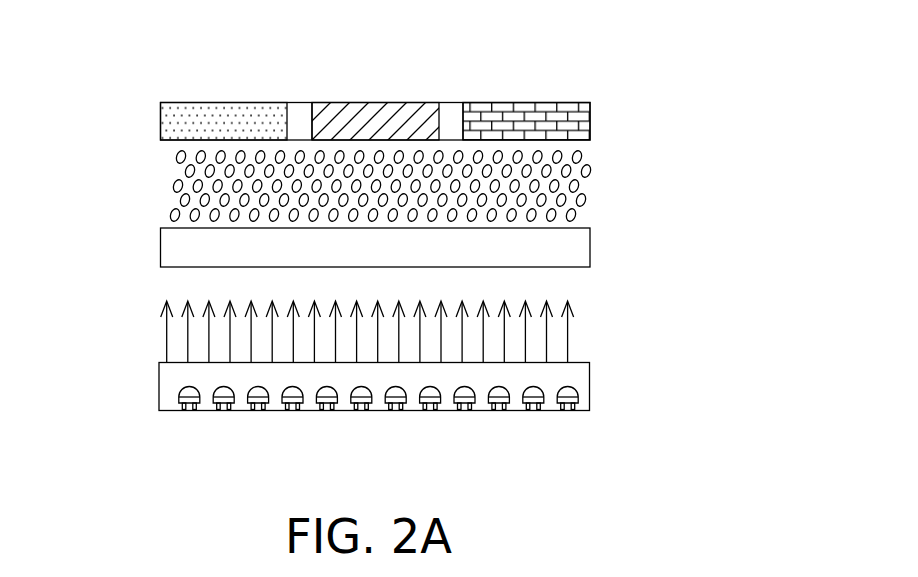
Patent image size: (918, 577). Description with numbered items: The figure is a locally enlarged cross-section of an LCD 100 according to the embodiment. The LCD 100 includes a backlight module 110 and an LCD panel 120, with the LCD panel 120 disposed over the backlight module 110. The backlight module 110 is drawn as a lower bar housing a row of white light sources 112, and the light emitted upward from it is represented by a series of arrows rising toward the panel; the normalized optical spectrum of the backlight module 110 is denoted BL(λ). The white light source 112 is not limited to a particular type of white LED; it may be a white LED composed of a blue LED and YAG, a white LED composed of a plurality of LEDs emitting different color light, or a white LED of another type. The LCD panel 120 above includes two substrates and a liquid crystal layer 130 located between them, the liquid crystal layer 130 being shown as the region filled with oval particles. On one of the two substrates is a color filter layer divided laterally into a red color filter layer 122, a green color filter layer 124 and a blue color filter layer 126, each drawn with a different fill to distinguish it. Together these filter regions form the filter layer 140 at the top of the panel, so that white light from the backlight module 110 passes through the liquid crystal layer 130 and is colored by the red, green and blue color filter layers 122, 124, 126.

The LCD 100 is at (403, 245).
The backlight module 110 is at (399, 413).
The white light source 112 is at (178, 403).
The LCD panel 120 is at (403, 140).
The red color filter layer 122 is at (537, 112).
The green color filter layer 124 is at (385, 112).
The blue color filter layer 126 is at (220, 112).
The liquid crystal layer 130 is at (153, 143).
The micro-structure layer 140 is at (403, 77).